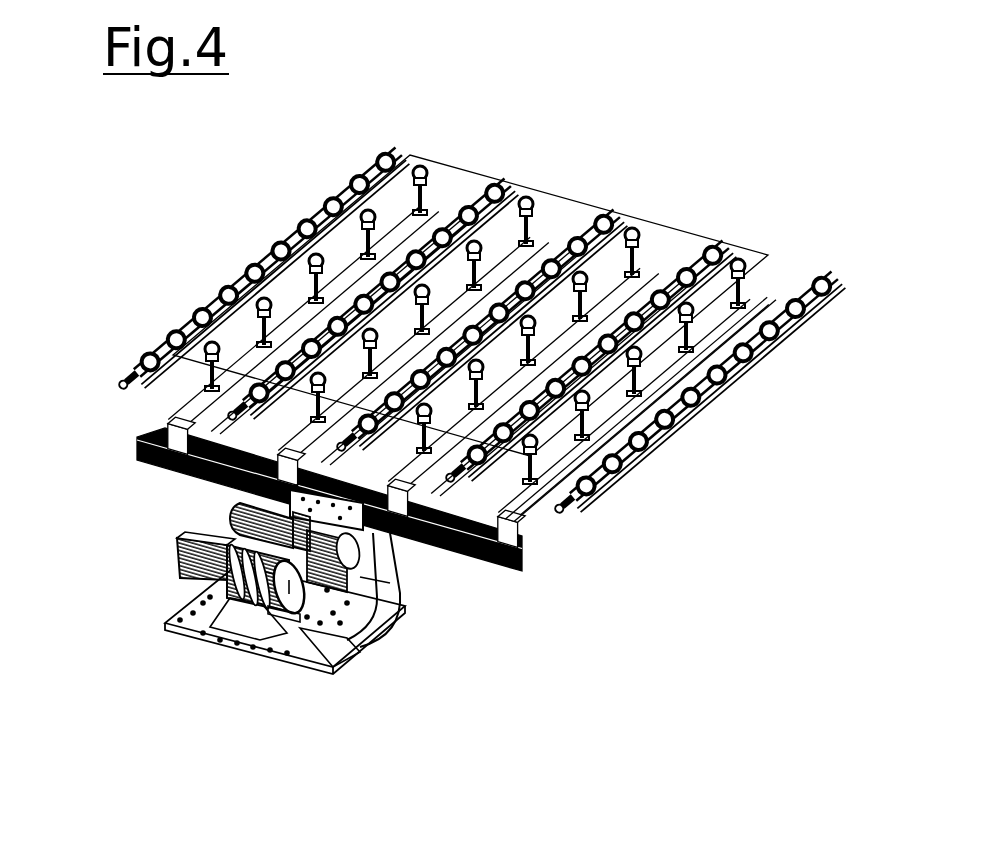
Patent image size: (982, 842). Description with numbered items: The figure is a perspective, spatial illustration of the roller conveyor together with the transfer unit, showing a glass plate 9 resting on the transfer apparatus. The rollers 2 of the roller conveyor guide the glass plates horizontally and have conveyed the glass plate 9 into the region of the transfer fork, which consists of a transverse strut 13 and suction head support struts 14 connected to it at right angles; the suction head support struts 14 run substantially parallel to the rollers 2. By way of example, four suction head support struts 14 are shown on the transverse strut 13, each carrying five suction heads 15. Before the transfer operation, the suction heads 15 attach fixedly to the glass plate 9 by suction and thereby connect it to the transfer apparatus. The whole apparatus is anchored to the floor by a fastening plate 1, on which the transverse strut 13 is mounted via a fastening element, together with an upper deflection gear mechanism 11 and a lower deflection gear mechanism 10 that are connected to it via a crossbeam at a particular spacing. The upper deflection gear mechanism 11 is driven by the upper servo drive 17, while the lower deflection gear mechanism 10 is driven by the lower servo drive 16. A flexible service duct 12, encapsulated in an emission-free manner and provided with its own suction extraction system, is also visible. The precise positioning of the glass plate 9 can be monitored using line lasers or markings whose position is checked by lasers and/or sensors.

The fastening plate 1 is at (240, 640).
The rollers 2 is at (698, 253).
The glass plate 9 is at (243, 317).
The lower deflection gear mechanism 10 is at (285, 612).
The upper deflection gear mechanism 11 is at (349, 637).
The flexible service duct 12 is at (372, 602).
The transverse strut 13 is at (517, 565).
The suction head support struts 14 is at (533, 497).
The suction heads 15 is at (737, 260).
The lower servo drive 16 is at (180, 577).
The upper servo drive 17 is at (288, 526).